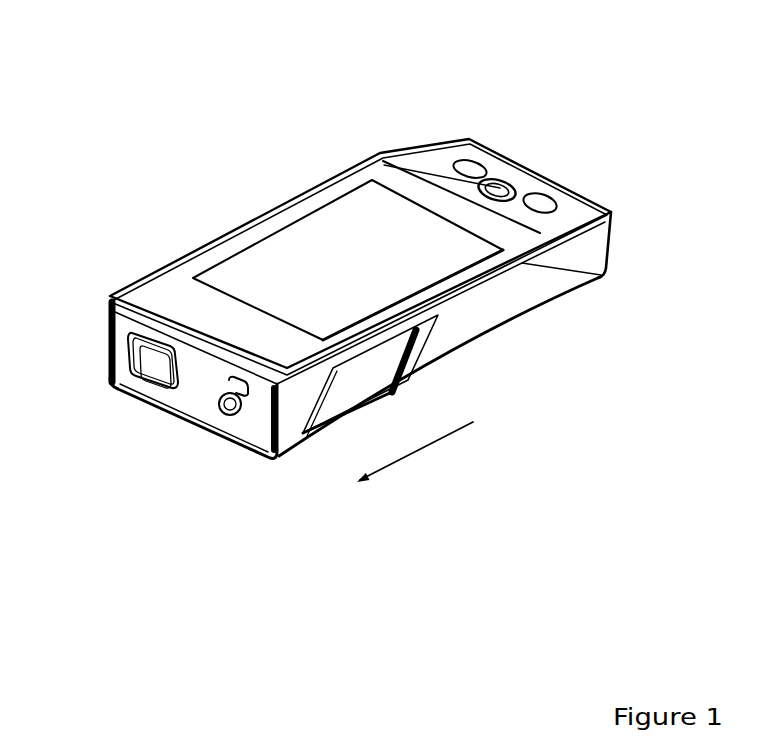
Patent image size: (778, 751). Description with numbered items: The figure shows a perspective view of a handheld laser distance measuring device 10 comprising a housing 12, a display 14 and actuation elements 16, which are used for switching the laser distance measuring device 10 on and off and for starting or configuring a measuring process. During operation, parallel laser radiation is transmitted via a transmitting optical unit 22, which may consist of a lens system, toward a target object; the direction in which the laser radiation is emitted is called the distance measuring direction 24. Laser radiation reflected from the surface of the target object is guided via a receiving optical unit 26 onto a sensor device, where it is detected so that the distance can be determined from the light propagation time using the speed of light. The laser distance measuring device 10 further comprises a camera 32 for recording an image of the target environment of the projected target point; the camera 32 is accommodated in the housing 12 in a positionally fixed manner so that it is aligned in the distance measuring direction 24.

The laser distance measuring device 10 is at (130, 102).
The housing 12 is at (480, 323).
The display 14 is at (347, 223).
The actuation elements 16 is at (469, 158).
The transmitting optical unit 22 is at (227, 419).
The distance measuring direction 24 is at (412, 452).
The receiving optical unit 26 is at (153, 362).
The camera 32 is at (243, 394).